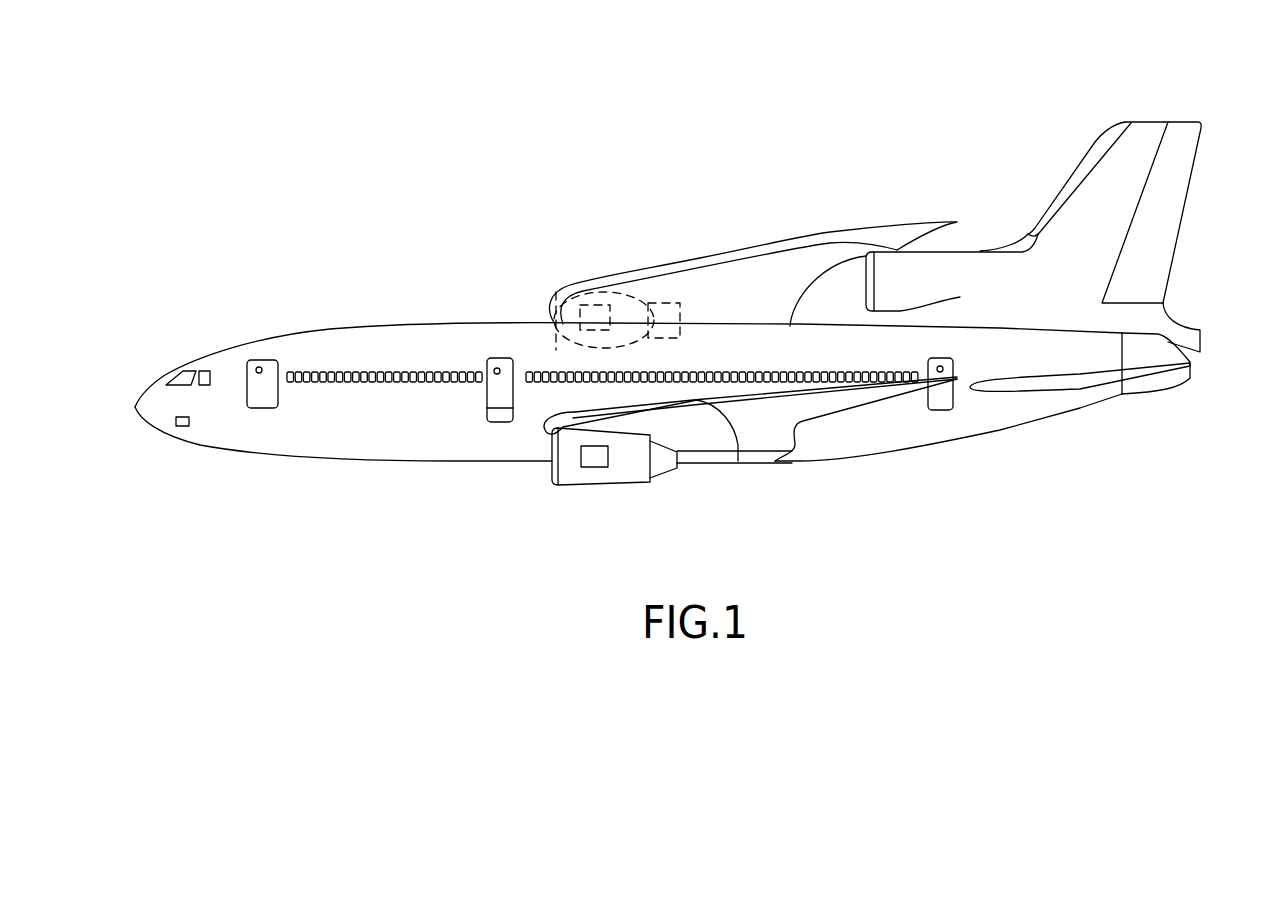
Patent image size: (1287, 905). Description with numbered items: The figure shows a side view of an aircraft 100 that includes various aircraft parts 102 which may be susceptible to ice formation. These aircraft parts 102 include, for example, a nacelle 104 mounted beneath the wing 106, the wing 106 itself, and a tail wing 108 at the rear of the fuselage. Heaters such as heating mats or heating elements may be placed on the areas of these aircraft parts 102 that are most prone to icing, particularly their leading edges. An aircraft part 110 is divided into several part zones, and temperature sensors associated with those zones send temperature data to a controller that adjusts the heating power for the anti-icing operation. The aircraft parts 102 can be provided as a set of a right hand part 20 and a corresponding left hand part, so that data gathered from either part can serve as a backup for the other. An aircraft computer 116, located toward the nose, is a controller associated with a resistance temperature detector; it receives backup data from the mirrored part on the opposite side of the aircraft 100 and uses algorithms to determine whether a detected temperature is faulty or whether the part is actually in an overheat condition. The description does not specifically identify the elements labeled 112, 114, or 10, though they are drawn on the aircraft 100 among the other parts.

The aircraft 100 is at (349, 232).
The aircraft parts 102 is at (389, 346).
The nacelle 104 is at (585, 488).
The wing 106 is at (704, 437).
The tail wing 108 is at (1140, 122).
The aircraft part 110 is at (553, 482).
The wing 112 is at (692, 398).
The leading edge of vertical stabilizer 114 is at (1087, 156).
The aircraft computer 116 is at (183, 430).
The sensor device 10 is at (608, 462).
The right hand part 20 is at (606, 316).